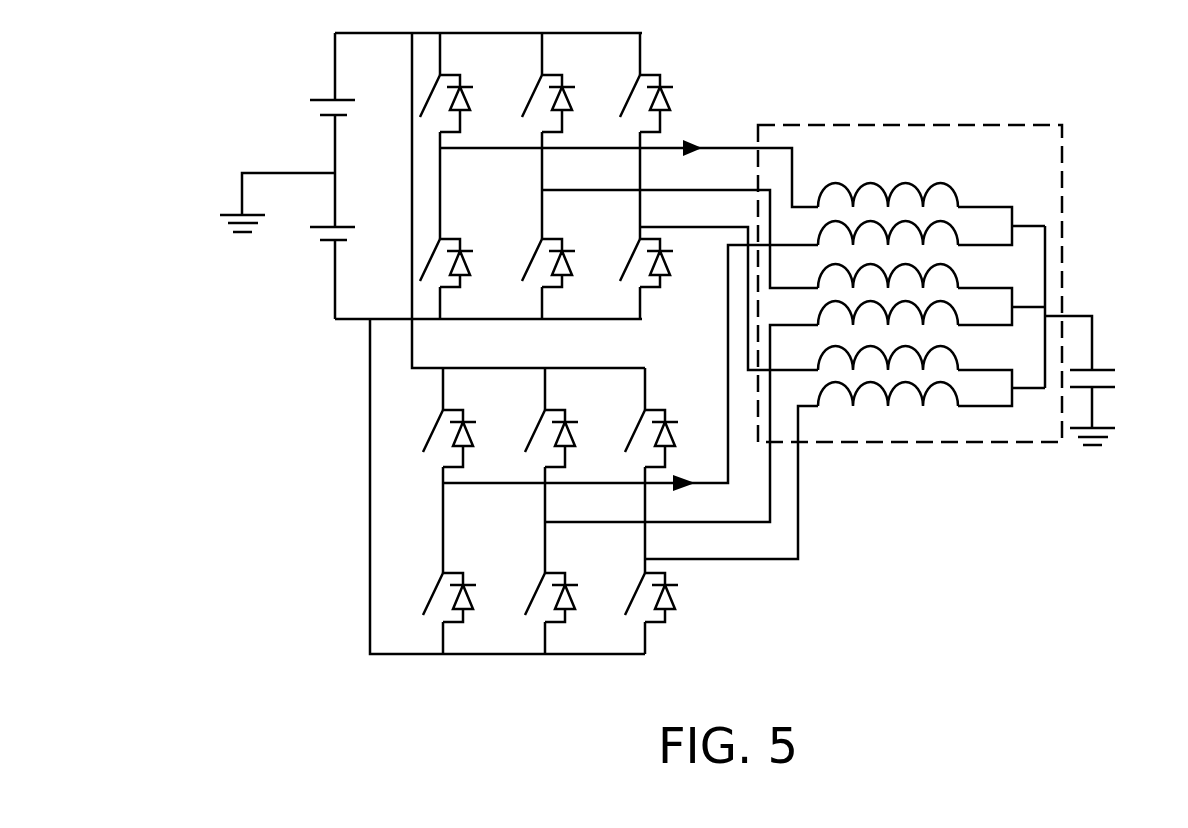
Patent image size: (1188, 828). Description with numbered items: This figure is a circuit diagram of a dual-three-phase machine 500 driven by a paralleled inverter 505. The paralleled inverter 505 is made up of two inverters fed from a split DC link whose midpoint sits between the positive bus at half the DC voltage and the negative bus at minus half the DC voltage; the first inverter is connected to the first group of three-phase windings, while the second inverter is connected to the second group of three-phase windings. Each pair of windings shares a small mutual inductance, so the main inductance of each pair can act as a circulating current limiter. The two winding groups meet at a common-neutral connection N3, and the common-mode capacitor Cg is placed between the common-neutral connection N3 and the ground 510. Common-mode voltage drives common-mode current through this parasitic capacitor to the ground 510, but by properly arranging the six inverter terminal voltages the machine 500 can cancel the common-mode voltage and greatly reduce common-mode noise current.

The dual-three-phase machine 500 is at (1153, 52).
The paralleled inverter 505 is at (274, 489).
The ground 510 is at (1118, 441).
The common-neutral connection N3 is at (1050, 303).